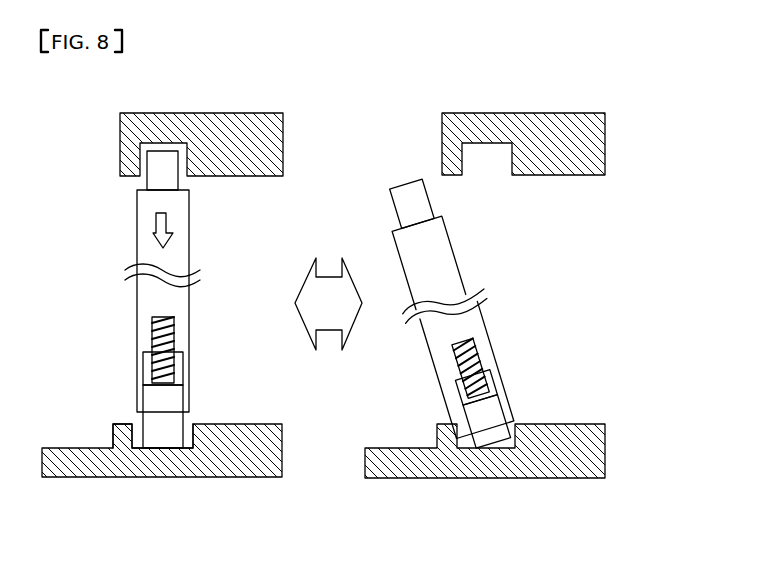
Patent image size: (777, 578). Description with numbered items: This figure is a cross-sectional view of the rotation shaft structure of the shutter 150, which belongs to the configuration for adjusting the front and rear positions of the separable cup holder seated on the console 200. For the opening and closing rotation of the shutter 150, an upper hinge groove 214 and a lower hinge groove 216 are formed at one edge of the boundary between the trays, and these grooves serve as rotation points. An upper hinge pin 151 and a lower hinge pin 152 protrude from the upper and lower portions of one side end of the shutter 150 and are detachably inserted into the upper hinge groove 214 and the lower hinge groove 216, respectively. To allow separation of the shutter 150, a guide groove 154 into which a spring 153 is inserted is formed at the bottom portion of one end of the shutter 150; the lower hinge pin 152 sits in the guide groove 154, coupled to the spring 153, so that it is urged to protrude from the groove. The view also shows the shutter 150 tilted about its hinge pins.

The upper hinge groove 214 is at (175, 143).
The upper hinge pin 151 is at (157, 182).
The shutter 150 is at (149, 339).
The guide groove 154 is at (148, 373).
The spring 153 is at (172, 364).
The lower hinge pin 152 is at (165, 428).
The lower hinge groove 216 is at (125, 433).
The console 200 is at (162, 493).